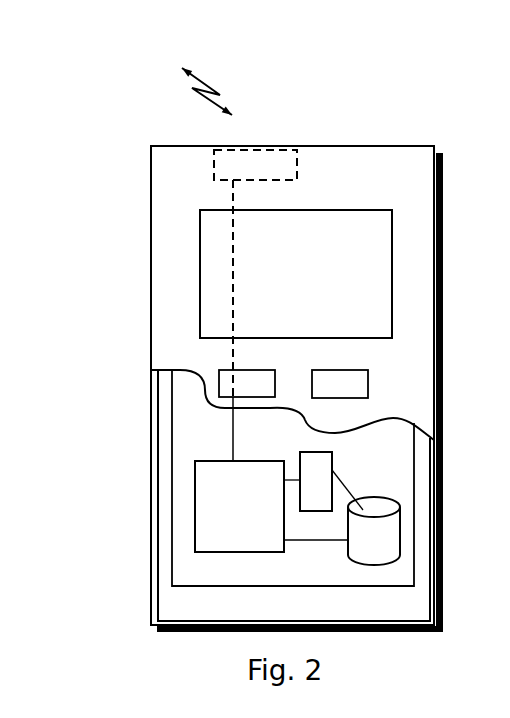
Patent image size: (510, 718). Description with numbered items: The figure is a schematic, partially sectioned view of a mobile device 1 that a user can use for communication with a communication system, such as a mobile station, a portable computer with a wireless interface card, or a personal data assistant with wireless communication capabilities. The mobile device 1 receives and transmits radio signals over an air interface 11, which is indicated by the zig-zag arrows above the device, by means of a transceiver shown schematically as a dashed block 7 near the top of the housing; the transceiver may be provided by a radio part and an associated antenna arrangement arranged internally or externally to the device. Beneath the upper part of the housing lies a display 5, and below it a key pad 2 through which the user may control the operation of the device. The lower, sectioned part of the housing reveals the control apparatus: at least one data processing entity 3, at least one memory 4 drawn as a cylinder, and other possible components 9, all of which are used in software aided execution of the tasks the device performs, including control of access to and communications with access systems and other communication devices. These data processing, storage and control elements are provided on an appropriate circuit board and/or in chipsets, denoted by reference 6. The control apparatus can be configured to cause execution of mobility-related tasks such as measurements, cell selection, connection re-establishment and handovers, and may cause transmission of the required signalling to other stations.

The mobile device 1 is at (151, 185).
The key pad 2 is at (222, 385).
The data processing entity 3 is at (203, 491).
The memory 4 is at (368, 545).
The display 5 is at (217, 260).
The circuit board 6 is at (195, 568).
The transceiver 7 is at (277, 146).
The other components 9 is at (317, 466).
The air interface 11 is at (214, 91).